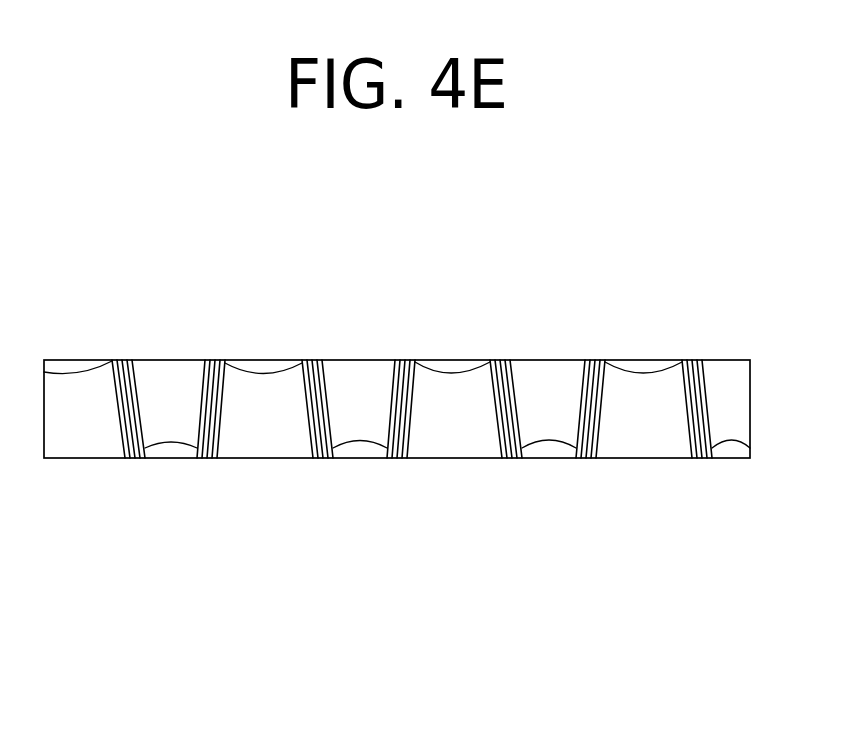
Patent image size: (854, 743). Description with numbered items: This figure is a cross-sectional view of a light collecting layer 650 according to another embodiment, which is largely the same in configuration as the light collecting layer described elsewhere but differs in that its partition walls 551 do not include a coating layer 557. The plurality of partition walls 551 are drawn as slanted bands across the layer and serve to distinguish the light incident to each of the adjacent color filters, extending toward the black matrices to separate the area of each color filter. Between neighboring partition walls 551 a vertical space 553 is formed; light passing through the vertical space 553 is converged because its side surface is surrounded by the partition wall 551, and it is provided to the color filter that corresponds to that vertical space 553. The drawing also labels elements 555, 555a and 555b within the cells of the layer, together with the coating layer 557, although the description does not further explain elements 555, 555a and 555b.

The light collecting layer 650 is at (415, 222).
The partition wall 551 is at (117, 358).
The vertical space 553 is at (556, 402).
The meniscus layers 555 is at (357, 525).
The first meniscus 555a is at (263, 370).
The second meniscus 555b is at (360, 450).
The coating layer 557 is at (195, 460).